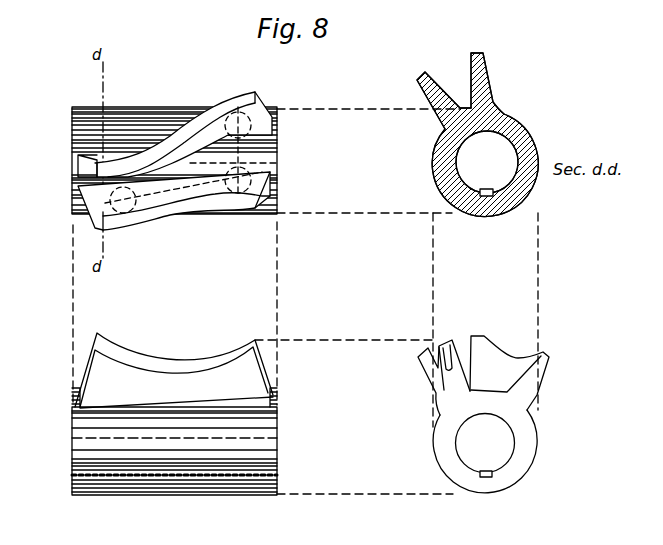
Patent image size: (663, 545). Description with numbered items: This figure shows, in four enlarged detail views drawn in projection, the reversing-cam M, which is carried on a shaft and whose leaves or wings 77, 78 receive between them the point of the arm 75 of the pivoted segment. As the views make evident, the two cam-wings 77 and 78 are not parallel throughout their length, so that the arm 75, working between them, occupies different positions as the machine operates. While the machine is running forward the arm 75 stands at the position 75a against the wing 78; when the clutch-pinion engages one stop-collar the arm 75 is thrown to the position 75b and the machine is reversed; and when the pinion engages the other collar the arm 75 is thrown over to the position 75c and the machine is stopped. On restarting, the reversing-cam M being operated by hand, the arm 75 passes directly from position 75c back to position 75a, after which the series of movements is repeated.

The arm 75 is at (423, 73).
The position of arm against wing 75a is at (240, 125).
The position of arm after reversal 75b is at (118, 202).
The position of arm at stop 75c is at (245, 185).
The cam-wing 77 is at (166, 216).
The cam-wing 78 is at (220, 107).
The reversing-cam M is at (85, 443).